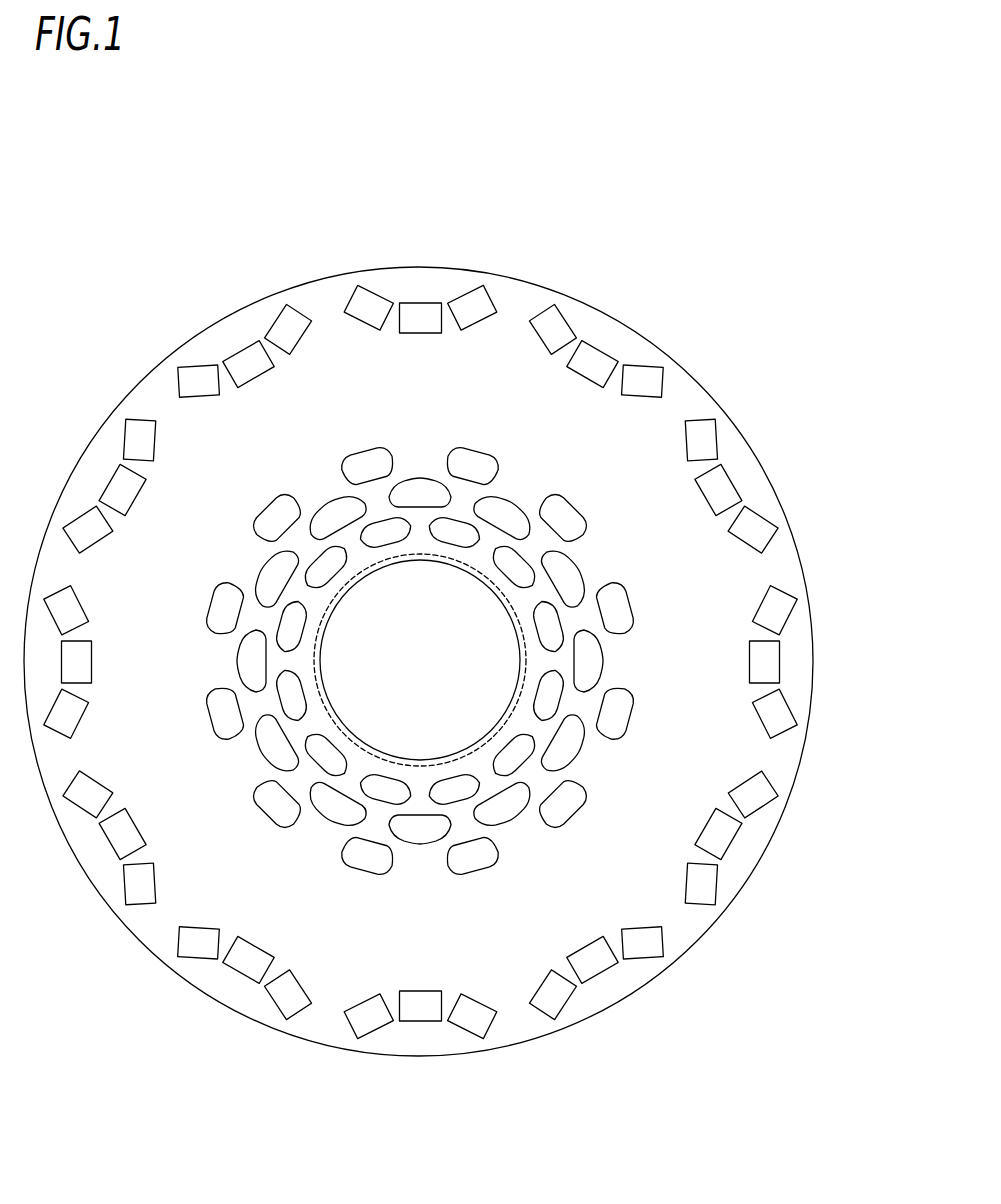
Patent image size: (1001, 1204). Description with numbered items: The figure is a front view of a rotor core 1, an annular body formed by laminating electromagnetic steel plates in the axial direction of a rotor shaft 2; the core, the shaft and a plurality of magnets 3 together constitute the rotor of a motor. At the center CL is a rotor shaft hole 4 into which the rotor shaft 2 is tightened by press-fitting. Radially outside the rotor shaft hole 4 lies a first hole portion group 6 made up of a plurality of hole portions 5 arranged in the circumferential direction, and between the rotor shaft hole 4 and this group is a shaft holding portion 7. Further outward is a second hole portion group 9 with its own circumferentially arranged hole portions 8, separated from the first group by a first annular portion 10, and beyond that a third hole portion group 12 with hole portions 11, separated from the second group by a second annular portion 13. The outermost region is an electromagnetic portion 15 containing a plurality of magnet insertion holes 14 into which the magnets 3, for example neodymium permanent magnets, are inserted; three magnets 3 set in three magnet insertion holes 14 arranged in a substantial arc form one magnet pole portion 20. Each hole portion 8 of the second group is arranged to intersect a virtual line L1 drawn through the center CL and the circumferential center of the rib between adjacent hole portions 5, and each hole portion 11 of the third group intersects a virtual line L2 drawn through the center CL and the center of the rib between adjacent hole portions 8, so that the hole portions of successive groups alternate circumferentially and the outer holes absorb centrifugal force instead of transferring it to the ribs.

The rotor core 1 is at (668, 165).
The rotor shaft 2 is at (527, 641).
The magnet 3 is at (640, 366).
The rotor shaft hole 4 is at (359, 585).
The hole portion 5 is at (562, 622).
The first hole portion group 6 is at (349, 540).
The shaft holding portion 7 is at (386, 556).
The hole portion 8 is at (603, 670).
The second hole portion group 9 is at (307, 528).
The first annular portion 10 is at (368, 519).
The hole portion 11 is at (631, 612).
The third hole portion group 12 is at (333, 475).
The second annular portion 13 is at (347, 494).
The magnet insertion hole 14 is at (752, 528).
The electromagnetic portion 15 is at (329, 284).
The magnet pole portion 20 is at (440, 283).
The virtual line L1 is at (420, 658).
The virtual line L2 is at (420, 658).
The center CL is at (409, 677).